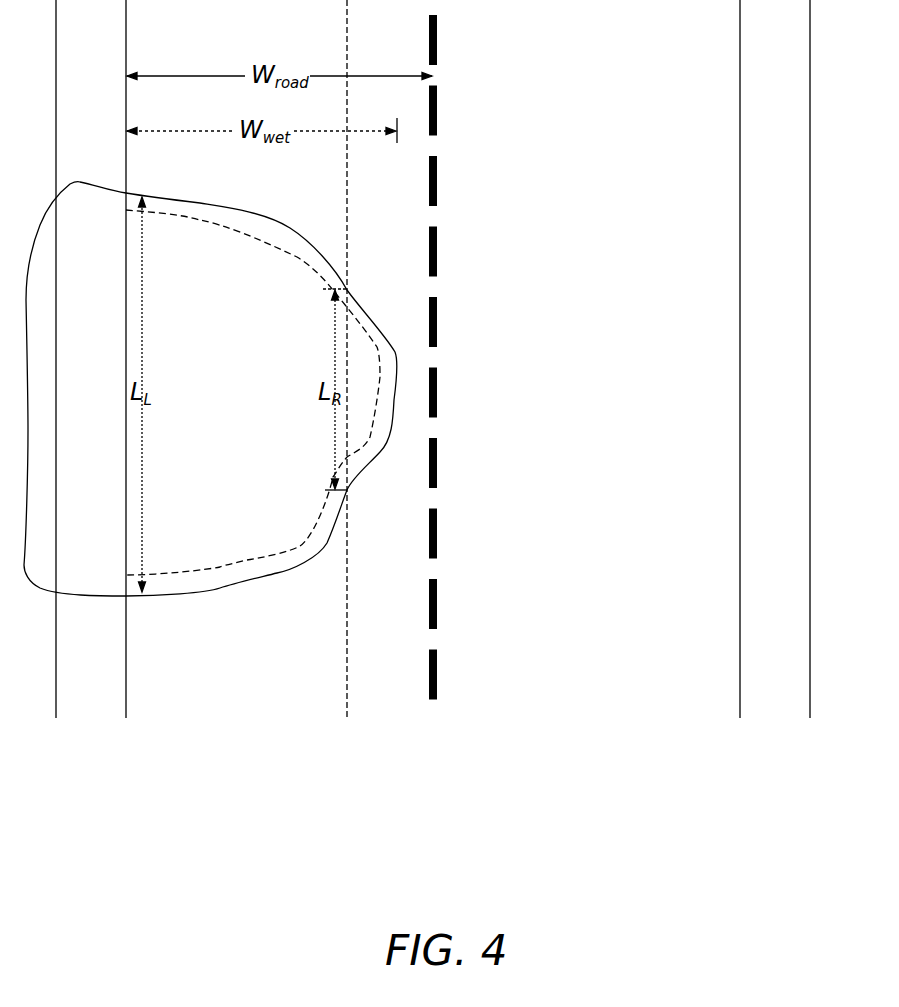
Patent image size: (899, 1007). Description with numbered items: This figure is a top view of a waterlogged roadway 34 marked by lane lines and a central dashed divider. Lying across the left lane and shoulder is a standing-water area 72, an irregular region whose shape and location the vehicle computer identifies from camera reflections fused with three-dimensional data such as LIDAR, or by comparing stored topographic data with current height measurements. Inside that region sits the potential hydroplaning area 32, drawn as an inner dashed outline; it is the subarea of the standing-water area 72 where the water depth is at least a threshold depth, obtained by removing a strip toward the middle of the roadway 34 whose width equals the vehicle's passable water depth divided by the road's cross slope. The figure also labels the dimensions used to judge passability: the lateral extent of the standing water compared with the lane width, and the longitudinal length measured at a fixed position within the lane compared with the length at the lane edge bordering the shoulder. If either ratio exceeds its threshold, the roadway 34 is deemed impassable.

The potential hydroplaning area 32 is at (180, 530).
The standing-water area 72 is at (383, 377).
The roadway 34 is at (537, 635).